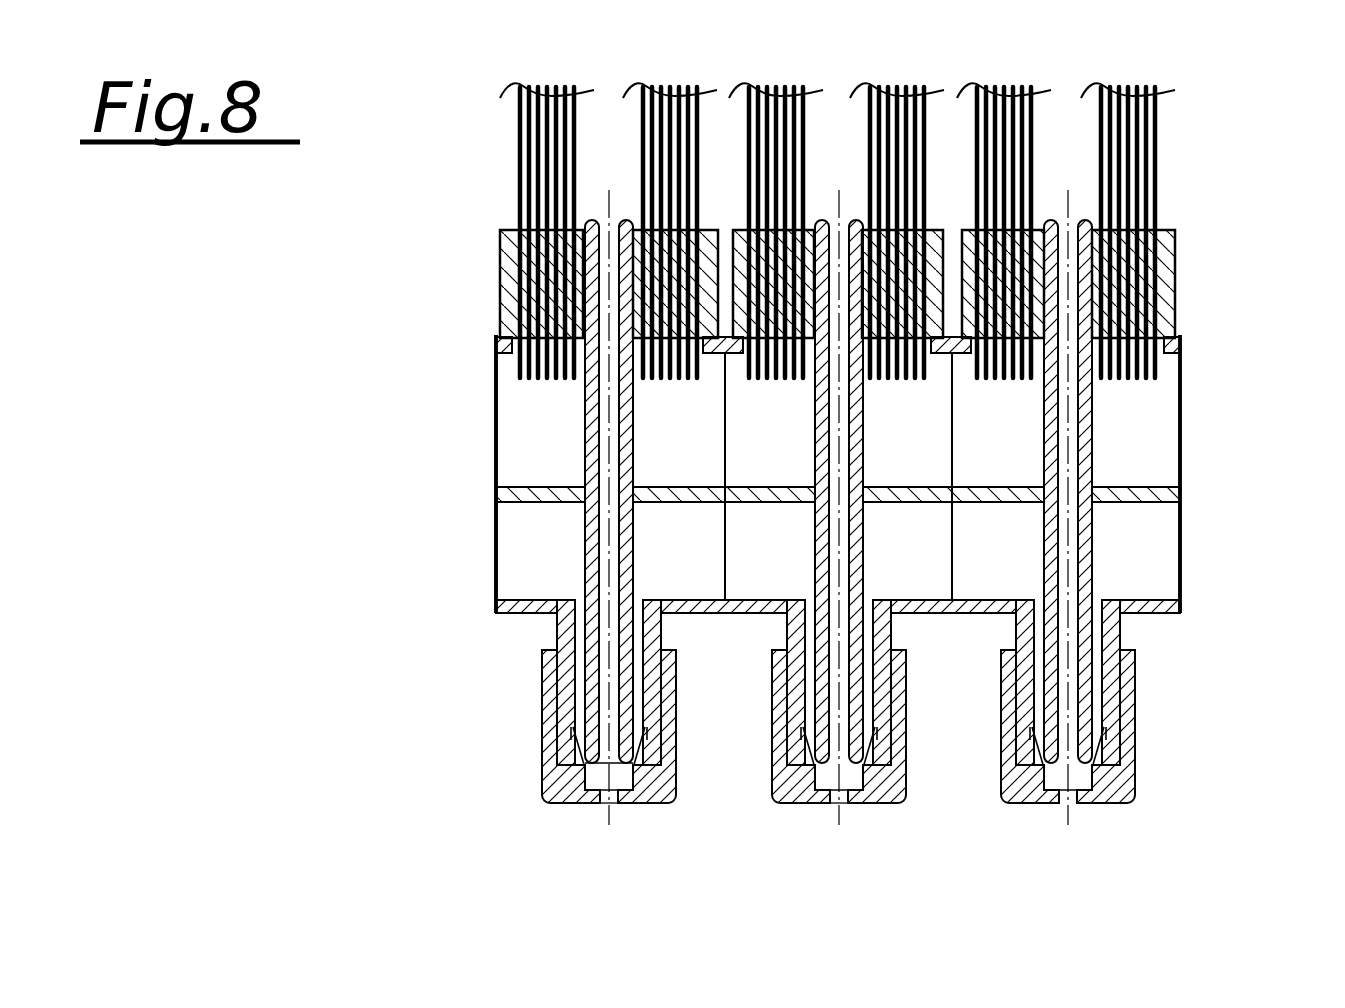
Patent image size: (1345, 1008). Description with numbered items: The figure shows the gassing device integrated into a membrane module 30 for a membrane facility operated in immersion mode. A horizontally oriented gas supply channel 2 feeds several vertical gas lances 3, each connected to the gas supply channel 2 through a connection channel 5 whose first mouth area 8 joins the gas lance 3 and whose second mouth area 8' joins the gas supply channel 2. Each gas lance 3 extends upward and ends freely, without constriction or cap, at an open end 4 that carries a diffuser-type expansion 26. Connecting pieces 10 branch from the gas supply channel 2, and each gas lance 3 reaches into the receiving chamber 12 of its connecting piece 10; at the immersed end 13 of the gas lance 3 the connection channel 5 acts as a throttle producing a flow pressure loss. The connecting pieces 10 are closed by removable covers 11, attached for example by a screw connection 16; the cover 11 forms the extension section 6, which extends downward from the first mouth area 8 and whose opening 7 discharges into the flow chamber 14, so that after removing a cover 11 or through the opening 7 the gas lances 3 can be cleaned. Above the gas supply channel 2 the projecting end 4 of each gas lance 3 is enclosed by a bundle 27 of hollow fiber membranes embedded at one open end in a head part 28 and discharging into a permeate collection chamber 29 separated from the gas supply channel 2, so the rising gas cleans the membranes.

The gas supply channel 2 is at (510, 555).
The gas lance 3 is at (806, 453).
The open end 4 is at (810, 214).
The connection channel 5 is at (1105, 635).
The extension section 6 is at (850, 818).
The opening 7 is at (618, 823).
The first mouth area 8 is at (527, 826).
The second mouth area 8' is at (712, 571).
The connecting piece 10 is at (885, 636).
The cover 11 is at (898, 745).
The receiving chamber 12 is at (587, 678).
The end of the gas lance 13 is at (627, 742).
The flow chamber 14 is at (640, 802).
The screw connection 16 is at (780, 672).
The diffuser-type expansion 26 is at (826, 235).
The bundle of hollow fiber membranes 27 is at (1158, 168).
The head part 28 is at (1185, 282).
The permeate collection chamber 29 is at (1145, 440).
The membrane module 30 is at (405, 340).